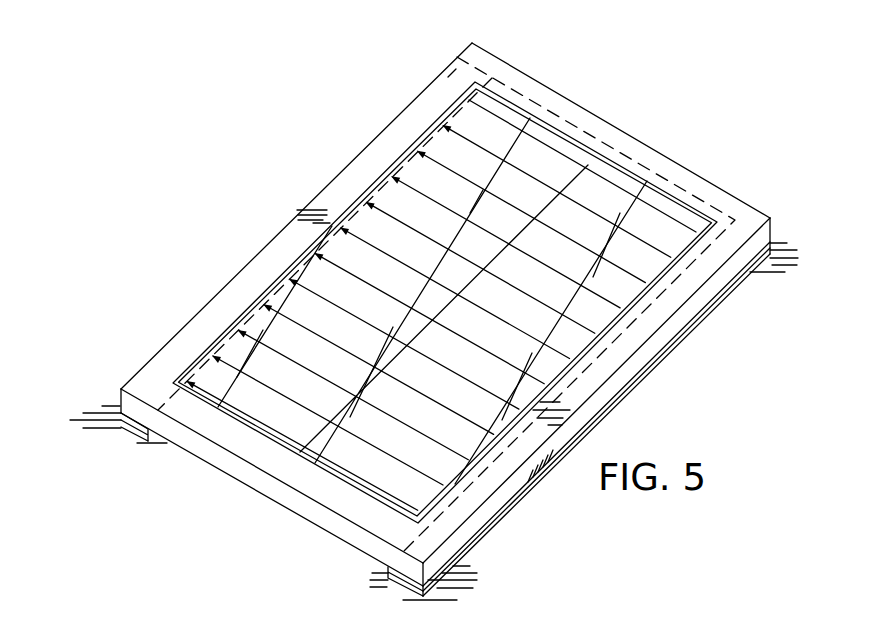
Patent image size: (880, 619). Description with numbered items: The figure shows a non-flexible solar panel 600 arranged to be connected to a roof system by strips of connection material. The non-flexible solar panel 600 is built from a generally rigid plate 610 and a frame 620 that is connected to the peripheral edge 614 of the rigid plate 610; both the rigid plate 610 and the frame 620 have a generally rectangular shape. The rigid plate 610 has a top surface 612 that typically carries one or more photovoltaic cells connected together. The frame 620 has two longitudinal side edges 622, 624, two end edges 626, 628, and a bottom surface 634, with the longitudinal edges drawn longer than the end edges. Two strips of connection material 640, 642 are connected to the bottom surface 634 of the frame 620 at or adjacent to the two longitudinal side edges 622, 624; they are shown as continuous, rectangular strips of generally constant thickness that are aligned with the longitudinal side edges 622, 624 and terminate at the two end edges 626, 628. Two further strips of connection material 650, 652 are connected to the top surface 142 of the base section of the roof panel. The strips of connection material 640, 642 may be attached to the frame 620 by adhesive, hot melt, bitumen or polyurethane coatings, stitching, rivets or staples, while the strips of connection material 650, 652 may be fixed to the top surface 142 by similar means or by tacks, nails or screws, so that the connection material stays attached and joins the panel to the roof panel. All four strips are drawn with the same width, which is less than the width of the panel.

The non-flexible solar panel 600 is at (258, 231).
The rigid plate 610 is at (386, 232).
The top surface 612 is at (547, 158).
The peripheral edge 614 is at (410, 145).
The frame 620 is at (210, 304).
The longitudinal side edge 622 is at (327, 183).
The longitudinal side edge 624 is at (640, 358).
The end edge 626 is at (635, 135).
The end edge 628 is at (280, 495).
The bottom surface 634 is at (230, 472).
The strip of connection material 640 is at (115, 430).
The strip of connection material 642 is at (508, 503).
The strip of connection material 650 is at (138, 430).
The strip of connection material 652 is at (493, 533).
The top surface 142 is at (772, 272).